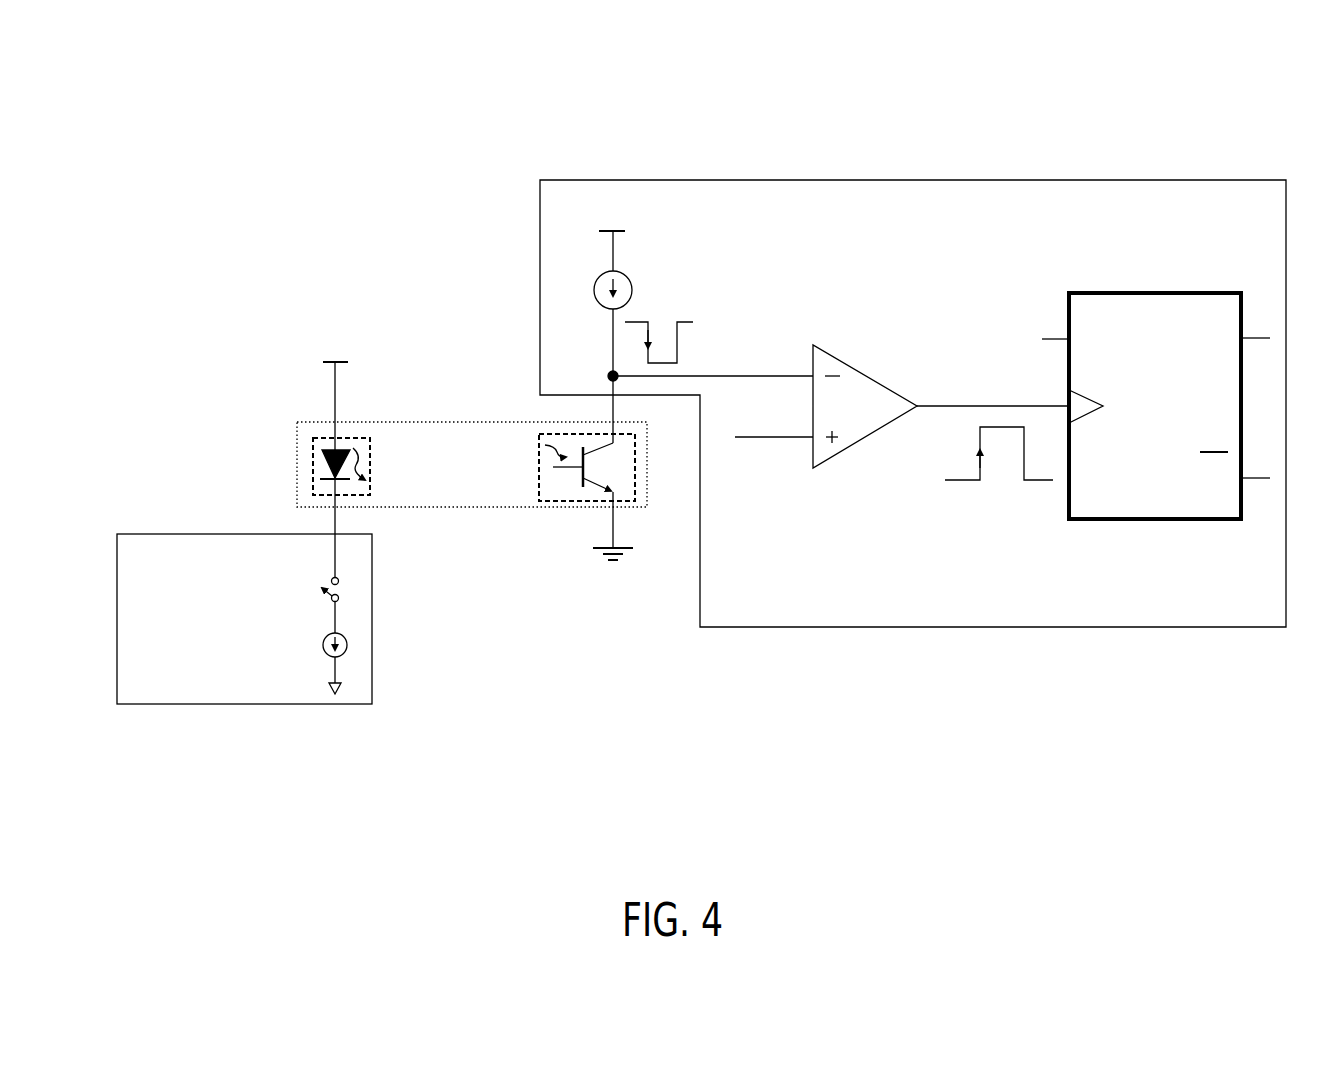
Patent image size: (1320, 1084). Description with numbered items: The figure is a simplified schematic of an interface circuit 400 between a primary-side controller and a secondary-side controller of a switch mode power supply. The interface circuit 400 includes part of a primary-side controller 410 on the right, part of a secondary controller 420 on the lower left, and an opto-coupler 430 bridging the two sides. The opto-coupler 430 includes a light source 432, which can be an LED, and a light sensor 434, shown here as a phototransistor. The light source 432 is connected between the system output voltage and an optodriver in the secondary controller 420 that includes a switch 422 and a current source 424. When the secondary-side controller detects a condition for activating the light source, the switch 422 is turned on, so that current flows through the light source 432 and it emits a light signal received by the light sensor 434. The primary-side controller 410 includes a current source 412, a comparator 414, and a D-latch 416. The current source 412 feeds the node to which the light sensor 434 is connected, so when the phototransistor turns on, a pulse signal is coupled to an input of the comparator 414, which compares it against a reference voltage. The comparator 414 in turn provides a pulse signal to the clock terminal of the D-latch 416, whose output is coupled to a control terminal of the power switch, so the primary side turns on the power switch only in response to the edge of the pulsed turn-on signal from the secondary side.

The interface circuit 400 is at (1176, 100).
The primary-side controller 410 is at (983, 620).
The current source 412 is at (588, 290).
The comparator 414 is at (883, 416).
The D-latch 416 is at (1165, 508).
The secondary controller 420 is at (200, 667).
The switch 422 is at (306, 595).
The current source 424 is at (310, 648).
The opto-coupler 430 is at (297, 443).
The light source 432 is at (372, 456).
The light sensor 434 is at (539, 485).